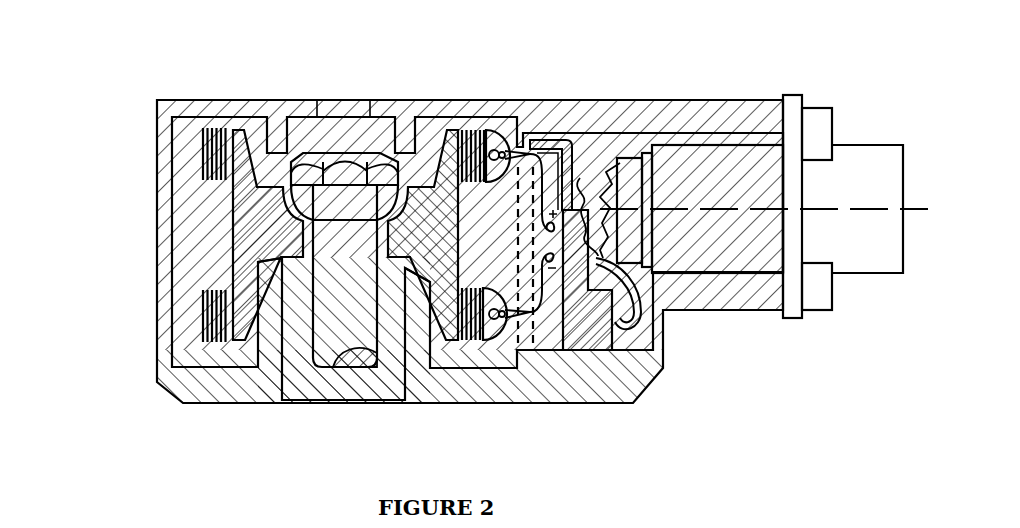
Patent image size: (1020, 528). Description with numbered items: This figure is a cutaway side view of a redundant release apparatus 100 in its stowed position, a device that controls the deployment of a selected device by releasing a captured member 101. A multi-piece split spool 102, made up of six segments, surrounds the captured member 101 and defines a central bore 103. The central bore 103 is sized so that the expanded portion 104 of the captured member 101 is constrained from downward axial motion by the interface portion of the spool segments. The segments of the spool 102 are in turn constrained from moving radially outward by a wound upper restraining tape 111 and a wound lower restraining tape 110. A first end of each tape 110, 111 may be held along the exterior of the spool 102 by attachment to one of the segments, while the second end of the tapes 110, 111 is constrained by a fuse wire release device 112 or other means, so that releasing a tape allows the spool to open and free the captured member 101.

The redundant release apparatus 100 is at (512, 100).
The captured member 101 is at (357, 367).
The multi-piece split spool 102 is at (233, 216).
The central bore 103 is at (292, 260).
The expanded portion 104 is at (331, 153).
The lower restraining tape 110 is at (200, 310).
The upper restraining tape 111 is at (200, 160).
The fuse wire release device 112 is at (540, 335).